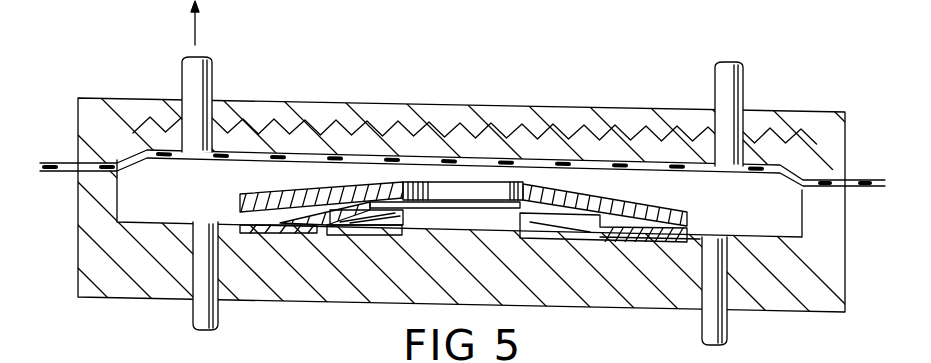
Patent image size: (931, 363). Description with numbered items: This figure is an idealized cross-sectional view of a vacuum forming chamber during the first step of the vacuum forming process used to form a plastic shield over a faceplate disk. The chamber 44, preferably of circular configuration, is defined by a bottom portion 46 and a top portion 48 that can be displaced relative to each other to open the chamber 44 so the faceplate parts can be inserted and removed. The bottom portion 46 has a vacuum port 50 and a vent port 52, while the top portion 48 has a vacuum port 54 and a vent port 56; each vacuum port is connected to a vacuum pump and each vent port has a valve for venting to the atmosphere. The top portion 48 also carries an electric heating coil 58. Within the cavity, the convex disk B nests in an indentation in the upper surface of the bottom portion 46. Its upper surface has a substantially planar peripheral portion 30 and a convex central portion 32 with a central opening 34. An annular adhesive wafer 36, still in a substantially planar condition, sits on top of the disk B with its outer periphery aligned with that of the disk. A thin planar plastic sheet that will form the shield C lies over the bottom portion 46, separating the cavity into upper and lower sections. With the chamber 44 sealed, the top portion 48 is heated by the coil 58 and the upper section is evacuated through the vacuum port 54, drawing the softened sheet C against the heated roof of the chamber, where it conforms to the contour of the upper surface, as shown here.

The planar peripheral portion 30 is at (684, 228).
The convex central portion 32 is at (597, 222).
The central opening 34 is at (540, 200).
The adhesive wafer 36 is at (665, 203).
The chamber 44 is at (135, 197).
The bottom portion 46 is at (147, 273).
The top portion 48 is at (120, 105).
The vacuum port 50 is at (725, 322).
The vent port 52 is at (218, 312).
The vacuum port 54 is at (208, 80).
The vent port 56 is at (718, 77).
The electric heating coil 58 is at (417, 124).
The convex disk B is at (655, 247).
The plastic shield C is at (250, 166).